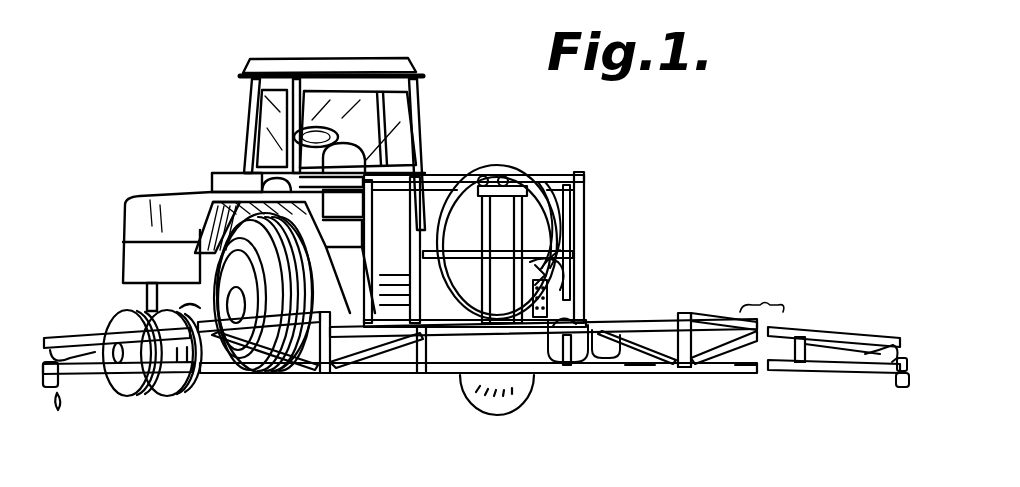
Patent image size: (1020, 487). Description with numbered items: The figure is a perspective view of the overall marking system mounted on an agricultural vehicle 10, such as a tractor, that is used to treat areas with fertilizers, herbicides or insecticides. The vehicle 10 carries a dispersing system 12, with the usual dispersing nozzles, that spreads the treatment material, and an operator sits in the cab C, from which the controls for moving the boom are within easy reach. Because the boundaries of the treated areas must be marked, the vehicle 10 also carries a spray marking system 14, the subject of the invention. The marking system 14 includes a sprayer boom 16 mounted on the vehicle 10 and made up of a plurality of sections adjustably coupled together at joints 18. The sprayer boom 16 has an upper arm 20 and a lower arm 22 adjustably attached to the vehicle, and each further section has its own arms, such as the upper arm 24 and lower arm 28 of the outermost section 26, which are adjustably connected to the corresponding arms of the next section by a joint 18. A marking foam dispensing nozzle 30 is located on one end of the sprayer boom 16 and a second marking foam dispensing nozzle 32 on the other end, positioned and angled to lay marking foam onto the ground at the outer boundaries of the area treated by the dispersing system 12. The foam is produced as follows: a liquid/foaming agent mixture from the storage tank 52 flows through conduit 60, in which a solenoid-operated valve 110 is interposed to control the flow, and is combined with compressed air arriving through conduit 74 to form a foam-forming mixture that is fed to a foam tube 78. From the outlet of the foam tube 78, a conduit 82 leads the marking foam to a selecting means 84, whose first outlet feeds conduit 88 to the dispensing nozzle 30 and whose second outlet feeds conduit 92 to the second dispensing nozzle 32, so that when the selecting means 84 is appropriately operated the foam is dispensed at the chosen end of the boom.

The cab C is at (408, 55).
The agricultural vehicle 10 is at (436, 122).
The dispersing system 12 is at (503, 158).
The spray marking system 14 is at (502, 249).
The sprayer boom 16 is at (654, 305).
The joints 18 is at (350, 375).
The upper arm 20 is at (477, 323).
The lower arm 22 is at (630, 377).
The upper arm of outermost section 24 is at (852, 338).
The outermost section 26 is at (835, 309).
The lower arm of outermost section 28 is at (873, 374).
The marking foam dispensing nozzle 30 is at (62, 377).
The second marking foam dispensing nozzle 32 is at (916, 398).
The storage tank 52 is at (533, 300).
The conduit 60 is at (540, 273).
The conduit 74 is at (560, 275).
The foam tube 78 is at (576, 208).
The conduit 82 is at (550, 188).
The selecting means 84 is at (617, 378).
The conduit 88 is at (474, 377).
The conduit 92 is at (752, 375).
The solenoid-operated valve 110 is at (557, 252).